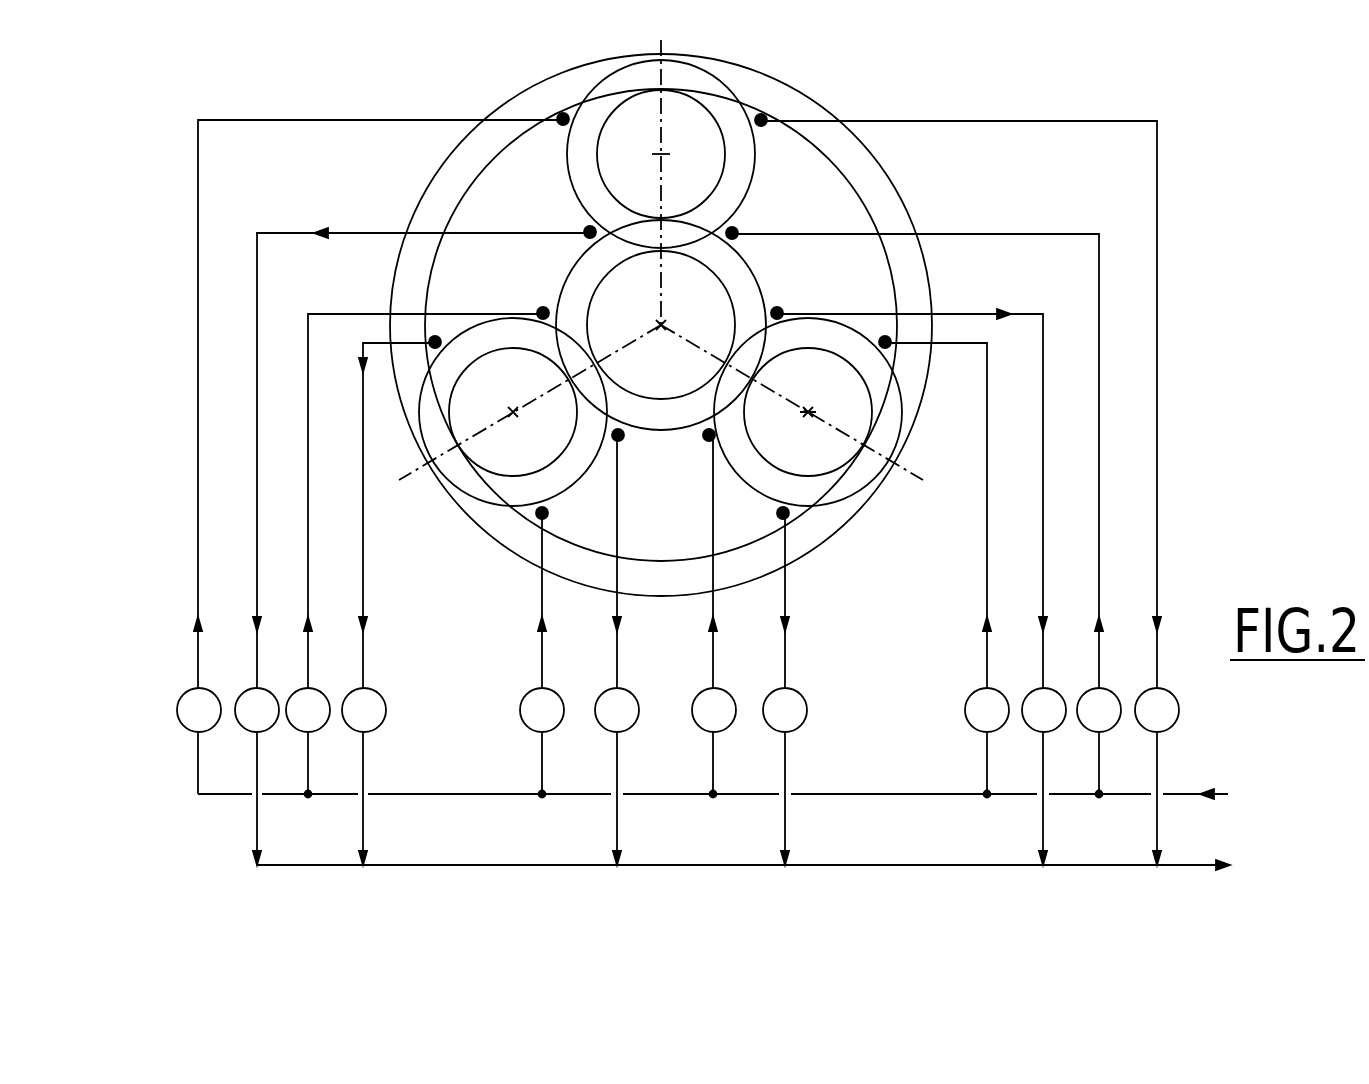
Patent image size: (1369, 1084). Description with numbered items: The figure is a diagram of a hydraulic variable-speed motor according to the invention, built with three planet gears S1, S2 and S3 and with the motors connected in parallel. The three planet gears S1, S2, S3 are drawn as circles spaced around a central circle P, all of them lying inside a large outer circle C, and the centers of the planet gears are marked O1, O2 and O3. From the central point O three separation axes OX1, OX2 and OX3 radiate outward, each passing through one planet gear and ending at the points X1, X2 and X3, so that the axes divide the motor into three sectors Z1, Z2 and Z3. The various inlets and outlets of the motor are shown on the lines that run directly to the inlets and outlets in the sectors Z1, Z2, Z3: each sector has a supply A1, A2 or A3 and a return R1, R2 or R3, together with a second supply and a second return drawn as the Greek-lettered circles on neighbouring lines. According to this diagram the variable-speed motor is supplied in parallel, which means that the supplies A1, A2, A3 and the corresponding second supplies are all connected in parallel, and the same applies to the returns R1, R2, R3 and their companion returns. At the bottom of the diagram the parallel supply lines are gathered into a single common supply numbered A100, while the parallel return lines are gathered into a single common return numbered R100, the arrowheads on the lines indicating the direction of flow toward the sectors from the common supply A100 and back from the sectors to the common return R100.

The annular casing / ring C is at (787, 100).
The central planet pinion P is at (661, 325).
The planet gear S1 is at (808, 412).
The planet gear S2 is at (661, 154).
The planet gear S3 is at (513, 412).
The origin of separation axes O is at (660, 339).
The center of first satellite O1 is at (810, 431).
The center of second satellite O2 is at (675, 157).
The center of third satellite O3 is at (528, 426).
The separation axis X1 is at (806, 413).
The separation axis X2 is at (666, 171).
The separation axis X3 is at (521, 413).
The sector Z1 is at (823, 261).
The sector Z2 is at (487, 263).
The sector Z3 is at (659, 492).
The supply A1 is at (944, 567).
The supply A2 is at (373, 453).
The supply A3 is at (542, 652).
The return R1 is at (918, 586).
The return R2 is at (415, 545).
The return R3 is at (617, 647).
The common supply A100 is at (743, 798).
The common return R100 is at (772, 869).